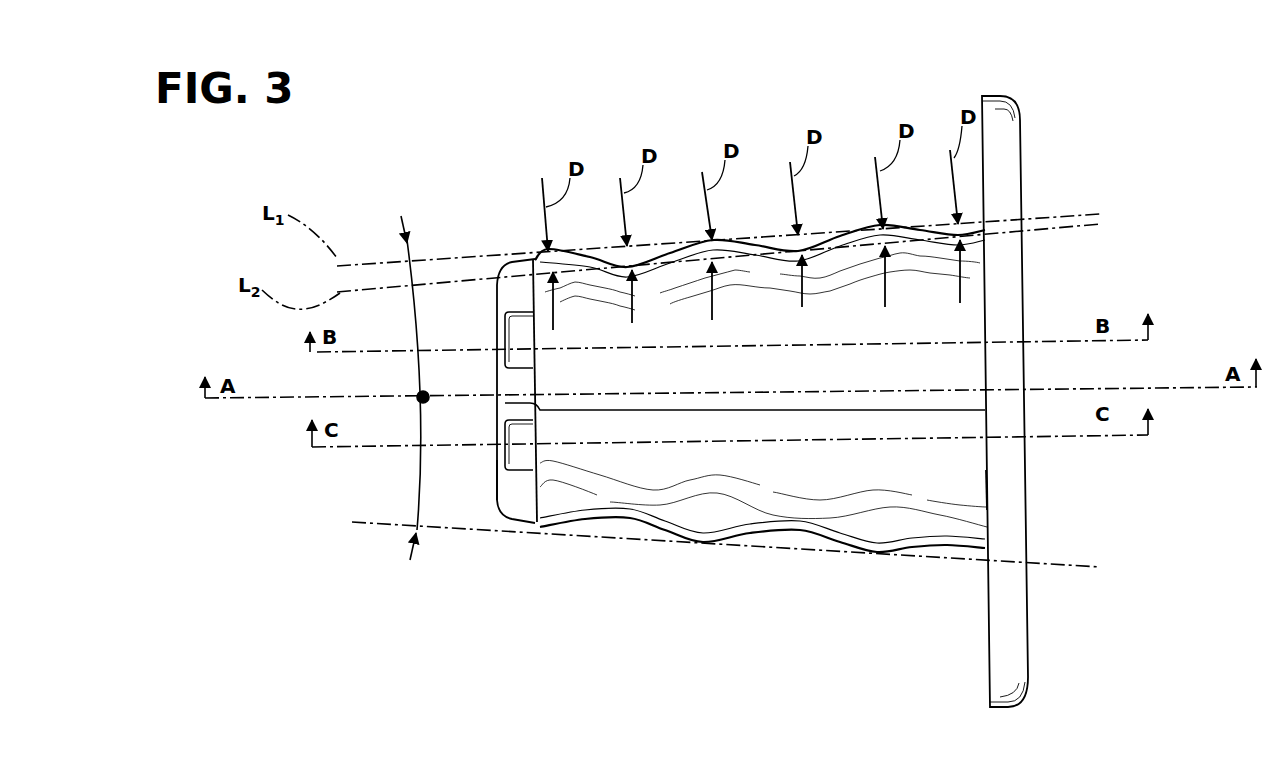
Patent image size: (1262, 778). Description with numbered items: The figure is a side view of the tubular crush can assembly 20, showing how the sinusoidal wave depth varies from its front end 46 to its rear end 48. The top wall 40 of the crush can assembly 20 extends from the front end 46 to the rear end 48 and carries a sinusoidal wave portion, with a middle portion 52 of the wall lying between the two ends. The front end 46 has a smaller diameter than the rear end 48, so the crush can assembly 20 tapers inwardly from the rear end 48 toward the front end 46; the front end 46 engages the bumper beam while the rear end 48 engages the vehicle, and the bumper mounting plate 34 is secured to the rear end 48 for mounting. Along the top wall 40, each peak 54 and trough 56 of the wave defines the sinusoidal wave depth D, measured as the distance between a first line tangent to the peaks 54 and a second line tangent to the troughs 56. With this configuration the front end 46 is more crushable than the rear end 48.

The crush can assembly 20 is at (584, 87).
The bumper mounting plate 34 is at (1021, 180).
The top wall 40 is at (516, 260).
The front end 46 is at (498, 488).
The rear end 48 is at (988, 488).
The middle portion 52 is at (782, 535).
The peak 54 is at (547, 249).
The trough 56 is at (628, 267).